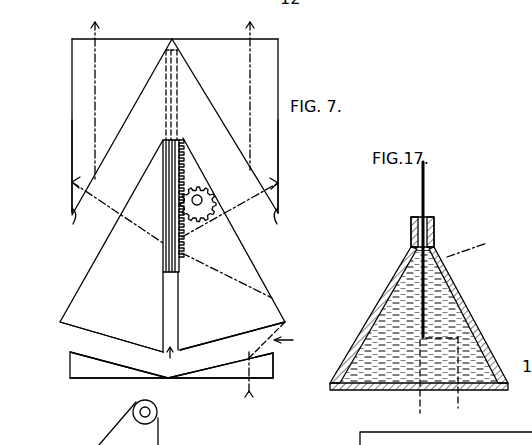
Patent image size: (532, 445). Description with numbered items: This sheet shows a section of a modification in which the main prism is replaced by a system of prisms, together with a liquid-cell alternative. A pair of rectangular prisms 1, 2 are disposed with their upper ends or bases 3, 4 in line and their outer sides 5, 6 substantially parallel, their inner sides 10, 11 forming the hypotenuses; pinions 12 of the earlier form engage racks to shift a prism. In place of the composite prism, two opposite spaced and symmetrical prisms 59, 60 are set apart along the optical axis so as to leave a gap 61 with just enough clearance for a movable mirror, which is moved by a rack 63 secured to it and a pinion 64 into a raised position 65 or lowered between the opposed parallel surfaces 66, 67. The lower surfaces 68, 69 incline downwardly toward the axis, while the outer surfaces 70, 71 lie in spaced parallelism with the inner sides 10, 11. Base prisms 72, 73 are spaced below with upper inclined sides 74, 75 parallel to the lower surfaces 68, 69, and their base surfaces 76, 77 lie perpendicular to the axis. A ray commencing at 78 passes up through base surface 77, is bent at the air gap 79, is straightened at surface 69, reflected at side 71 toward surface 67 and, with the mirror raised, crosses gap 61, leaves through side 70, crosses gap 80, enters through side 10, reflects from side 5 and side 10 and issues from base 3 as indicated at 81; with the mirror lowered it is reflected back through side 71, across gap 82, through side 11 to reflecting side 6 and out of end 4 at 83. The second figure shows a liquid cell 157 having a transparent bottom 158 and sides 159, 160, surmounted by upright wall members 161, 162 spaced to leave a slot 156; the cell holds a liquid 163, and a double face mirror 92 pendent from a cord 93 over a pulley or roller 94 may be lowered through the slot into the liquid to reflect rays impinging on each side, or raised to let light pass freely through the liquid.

In FIG. 7, the rectangular prism 1 is at (72, 48).
In FIG. 7, the rectangular prism 2 is at (278, 48).
In FIG. 7, the upper end or base 3 is at (145, 39).
In FIG. 7, the upper end or base 4 is at (202, 39).
In FIG. 7, the outer side 5 is at (72, 147).
In FIG. 7, the outer side 6 is at (288, 166).
In FIG. 7, the inner side 10 is at (72, 222).
In FIG. 7, the inner side 11 is at (289, 221).
In FIG. 17, the pinion 12 is at (527, 366).
In FIG. 7, the prism 59 is at (139, 252).
In FIG. 7, the prism 60 is at (256, 334).
In FIG. 7, the gap 61 is at (181, 358).
In FIG. 7, the rack 63 is at (184, 143).
In FIG. 7, the pinion 64 is at (205, 192).
In FIG. 7, the raised position 65 is at (172, 88).
In FIG. 7, the parallel surface 66 is at (163, 292).
In FIG. 7, the parallel surface 67 is at (178, 305).
In FIG. 7, the lower surface 68 is at (101, 333).
In FIG. 7, the lower surface 69 is at (232, 340).
In FIG. 7, the outer surface 70 is at (80, 289).
In FIG. 7, the outer surface 71 is at (262, 277).
In FIG. 7, the base prism 72 is at (74, 368).
In FIG. 7, the base prism 73 is at (270, 370).
In FIG. 7, the upper inclined side 74 is at (119, 361).
In FIG. 7, the upper inclined side 75 is at (220, 360).
In FIG. 7, the base surface 76 is at (110, 380).
In FIG. 7, the base or lower surface 77 is at (214, 380).
In FIG. 7, the light ray entry 78 is at (250, 387).
In FIG. 7, the air gap 79 is at (294, 340).
In FIG. 7, the gap 80 is at (122, 127).
In FIG. 7, the exit ray 81 is at (105, 91).
In FIG. 7, the gap 82 is at (225, 132).
In FIG. 7, the exit ray 83 is at (260, 86).
In FIG. 7, the cord or chain 93 is at (97, 444).
In FIG. 17, the cord or chain 93 is at (425, 185).
In FIG. 7, the pulley or roller 94 is at (142, 424).
In FIG. 17, the double face mirror 92 is at (428, 360).
In FIG. 17, the slot 156 is at (414, 217).
In FIG. 17, the liquid cell 157 is at (393, 392).
In FIG. 17, the bottom 158 is at (489, 391).
In FIG. 17, the side 159 is at (362, 326).
In FIG. 17, the side 160 is at (480, 320).
In FIG. 17, the upright wall member 161 is at (411, 237).
In FIG. 17, the upright wall member 162 is at (434, 237).
In FIG. 17, the liquid 163 is at (394, 284).